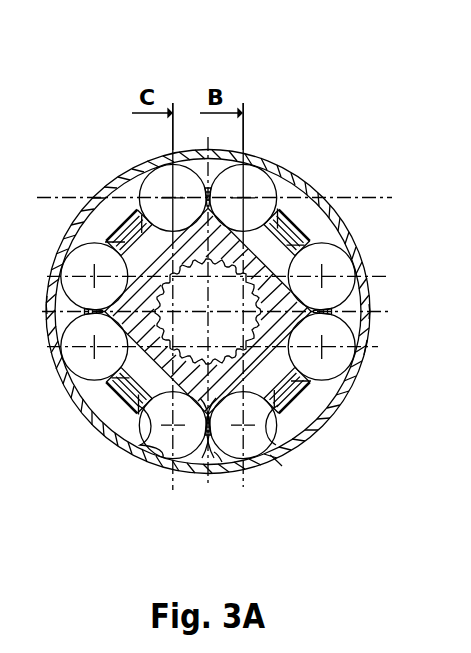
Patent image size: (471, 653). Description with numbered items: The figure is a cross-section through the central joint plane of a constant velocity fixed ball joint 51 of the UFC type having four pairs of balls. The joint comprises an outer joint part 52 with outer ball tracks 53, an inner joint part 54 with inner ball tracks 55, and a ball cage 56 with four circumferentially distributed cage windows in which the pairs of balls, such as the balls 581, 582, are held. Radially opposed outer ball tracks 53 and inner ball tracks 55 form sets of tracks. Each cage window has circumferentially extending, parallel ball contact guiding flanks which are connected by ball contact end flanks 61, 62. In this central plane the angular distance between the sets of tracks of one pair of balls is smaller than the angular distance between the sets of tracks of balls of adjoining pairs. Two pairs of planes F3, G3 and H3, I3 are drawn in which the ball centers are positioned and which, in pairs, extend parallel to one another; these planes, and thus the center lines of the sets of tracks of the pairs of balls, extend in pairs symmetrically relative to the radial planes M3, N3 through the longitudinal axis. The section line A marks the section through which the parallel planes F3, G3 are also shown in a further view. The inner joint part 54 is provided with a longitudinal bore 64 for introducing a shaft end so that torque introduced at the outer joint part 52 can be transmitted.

The freewheel clutch assembly 51 is at (342, 78).
The outer joint part 52 is at (330, 218).
The outer ball tracks 53 is at (165, 450).
The inner joint part 54 is at (270, 258).
The inner ball tracks 55 is at (203, 455).
The ball cage 56 is at (297, 402).
The ball of a pair of balls 581 is at (158, 182).
The ball of a pair of balls 582 is at (253, 182).
The ball contact end flank 61 is at (133, 443).
The ball contact end flank 62 is at (280, 455).
The longitudinal bore 64 is at (170, 329).
The section A— A is at (383, 191).
The plane F3 is at (172, 138).
The plane G3 is at (243, 123).
The radial plane N3 is at (52, 305).
The plane H3 is at (378, 312).
The plane I3 is at (377, 350).
The radial plane M3 is at (218, 455).